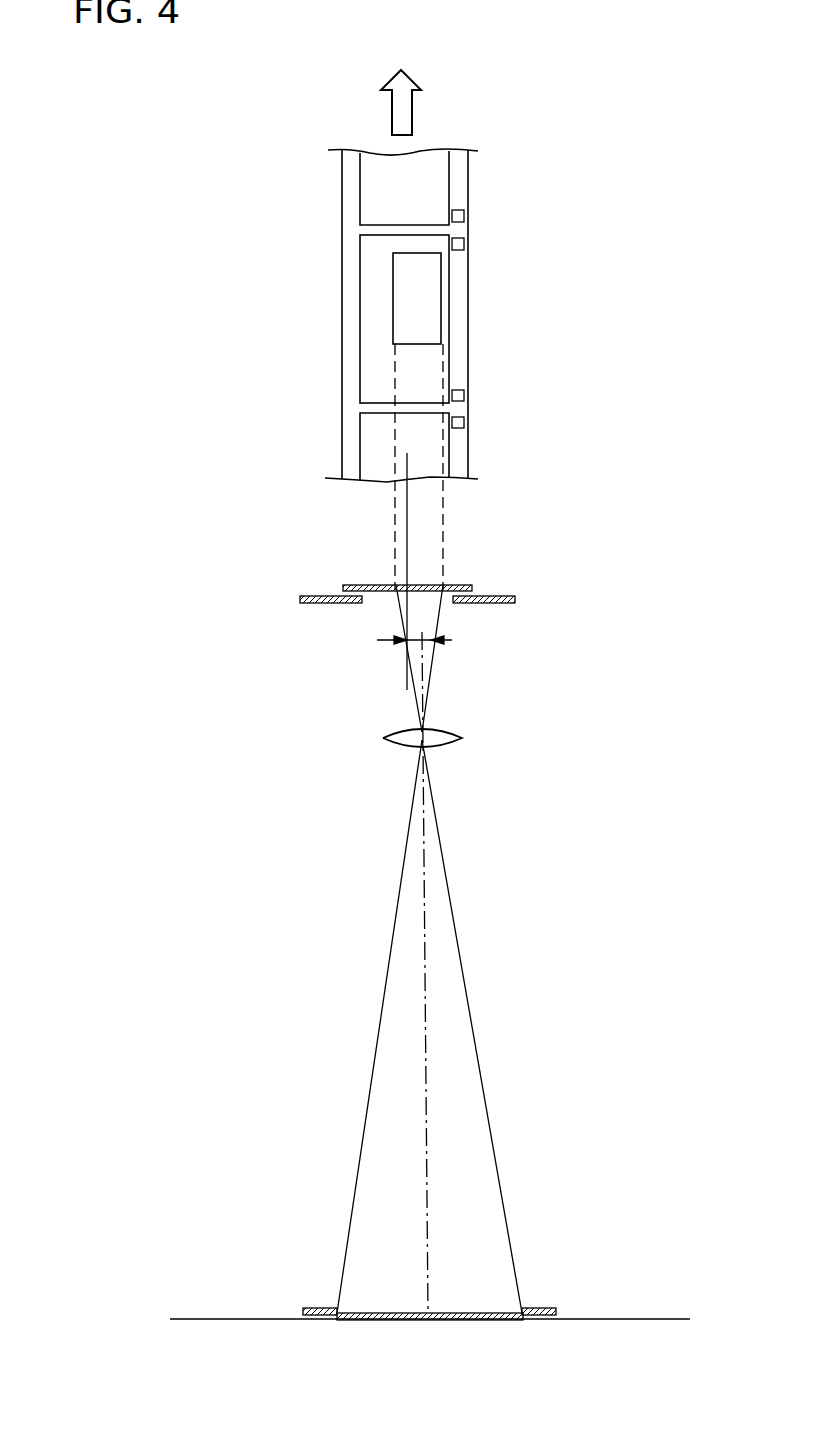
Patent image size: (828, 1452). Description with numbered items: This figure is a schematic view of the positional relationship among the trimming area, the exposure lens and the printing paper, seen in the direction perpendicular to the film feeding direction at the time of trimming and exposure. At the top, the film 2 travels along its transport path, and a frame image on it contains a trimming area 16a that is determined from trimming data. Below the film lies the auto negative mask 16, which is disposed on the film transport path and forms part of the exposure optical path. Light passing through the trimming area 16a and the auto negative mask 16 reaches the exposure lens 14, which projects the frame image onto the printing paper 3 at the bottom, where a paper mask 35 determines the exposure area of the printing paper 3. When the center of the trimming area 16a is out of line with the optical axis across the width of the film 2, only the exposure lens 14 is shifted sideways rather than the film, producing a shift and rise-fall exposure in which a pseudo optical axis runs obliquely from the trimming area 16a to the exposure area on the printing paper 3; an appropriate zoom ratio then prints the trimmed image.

The film 2 is at (330, 305).
The trimming area 16a is at (433, 319).
The auto negative mask 16 is at (388, 613).
The exposure lens 14 is at (448, 730).
The printing paper 3 is at (397, 1308).
The paper mask 35 is at (535, 1307).